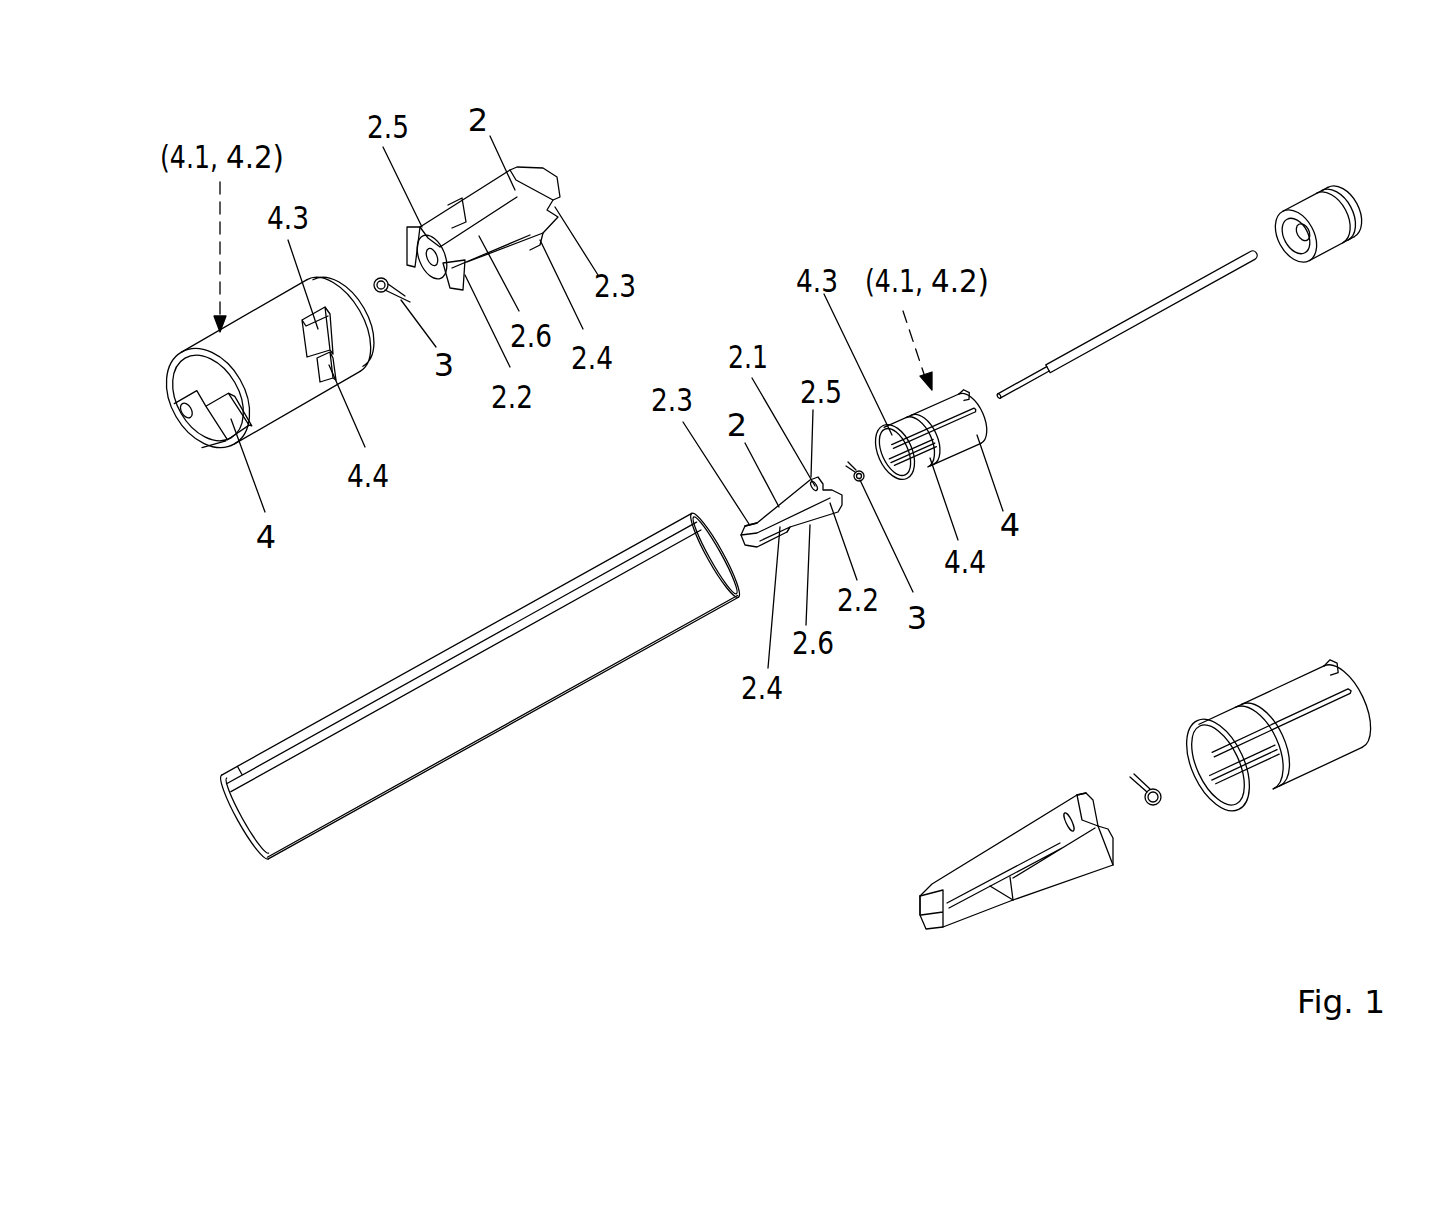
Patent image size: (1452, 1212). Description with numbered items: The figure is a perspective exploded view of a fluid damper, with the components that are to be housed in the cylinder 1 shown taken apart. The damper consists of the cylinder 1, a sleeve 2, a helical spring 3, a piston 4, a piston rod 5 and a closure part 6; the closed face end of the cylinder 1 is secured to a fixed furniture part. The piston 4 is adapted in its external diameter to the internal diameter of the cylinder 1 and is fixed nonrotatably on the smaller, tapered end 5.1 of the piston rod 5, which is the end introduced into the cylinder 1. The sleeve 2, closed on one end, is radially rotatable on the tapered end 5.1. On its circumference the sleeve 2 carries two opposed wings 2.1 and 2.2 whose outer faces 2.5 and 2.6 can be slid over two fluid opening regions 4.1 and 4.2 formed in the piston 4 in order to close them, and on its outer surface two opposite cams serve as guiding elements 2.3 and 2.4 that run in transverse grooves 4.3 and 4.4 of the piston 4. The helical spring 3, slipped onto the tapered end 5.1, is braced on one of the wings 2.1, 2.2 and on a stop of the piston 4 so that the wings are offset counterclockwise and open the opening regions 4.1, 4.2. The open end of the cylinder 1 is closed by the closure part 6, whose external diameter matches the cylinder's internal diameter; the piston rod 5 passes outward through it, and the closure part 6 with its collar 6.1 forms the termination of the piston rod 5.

The cylinder 1 is at (486, 712).
The sleeve 2 is at (1000, 862).
The wing 2.1 is at (1072, 844).
The wing 2.2 is at (1098, 850).
The guiding element 2.3 is at (940, 887).
The guiding element 2.4 is at (998, 900).
The outer face 2.5 is at (1077, 795).
The outer face 2.6 is at (1063, 890).
The helical spring 3 is at (1160, 810).
The piston 4 is at (1281, 743).
The fluid opening region 4.1 is at (1284, 660).
The fluid opening region 4.2 is at (1281, 725).
The transverse groove 4.3 is at (1226, 741).
The transverse groove 4.4 is at (1282, 784).
The piston rod 5 is at (1143, 373).
The tapered end 5.1 is at (1026, 392).
The closure part 6 is at (1349, 273).
The collar 6.1 is at (1323, 247).